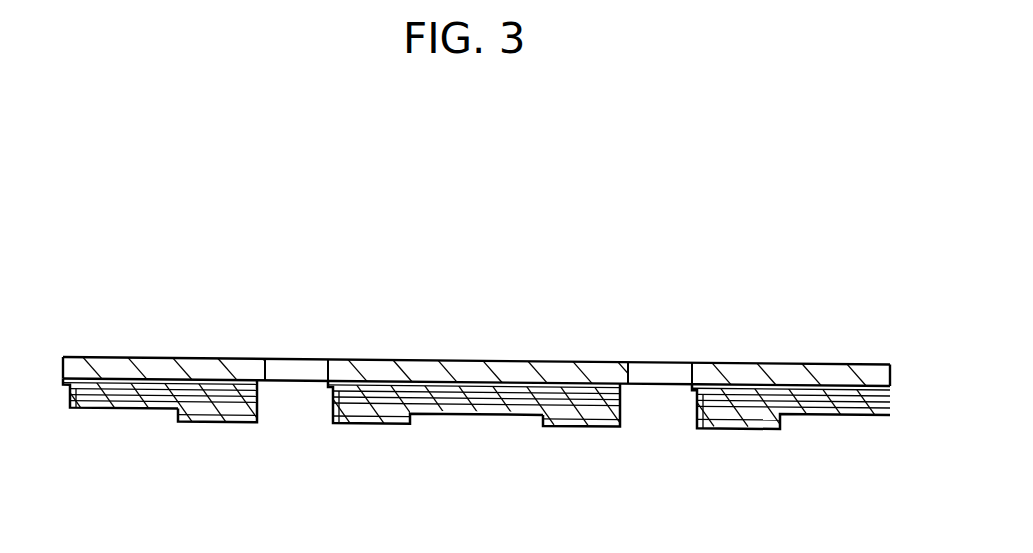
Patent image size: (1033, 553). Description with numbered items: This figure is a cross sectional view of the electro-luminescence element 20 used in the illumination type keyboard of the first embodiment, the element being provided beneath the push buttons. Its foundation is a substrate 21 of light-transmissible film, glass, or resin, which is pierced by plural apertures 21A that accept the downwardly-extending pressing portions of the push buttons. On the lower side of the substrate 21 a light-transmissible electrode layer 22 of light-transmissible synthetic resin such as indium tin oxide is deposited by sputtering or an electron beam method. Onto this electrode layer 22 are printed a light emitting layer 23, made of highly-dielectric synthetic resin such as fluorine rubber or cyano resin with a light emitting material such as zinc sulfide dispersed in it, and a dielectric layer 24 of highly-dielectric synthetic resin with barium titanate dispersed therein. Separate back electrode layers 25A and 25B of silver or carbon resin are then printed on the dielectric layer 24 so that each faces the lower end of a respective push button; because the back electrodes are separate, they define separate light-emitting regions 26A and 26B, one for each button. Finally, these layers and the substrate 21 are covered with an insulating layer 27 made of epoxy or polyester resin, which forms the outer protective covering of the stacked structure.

The electro-luminescence element 20 is at (521, 332).
The substrate 21 is at (118, 367).
The aperture 21A is at (293, 372).
The light-transmissible electrode layer 22 is at (102, 390).
The light emitting layer 23 is at (133, 396).
The dielectric layer 24 is at (167, 402).
The back electrode layer 25A is at (212, 413).
The back electrode layer 25B is at (574, 412).
The light-emitting region 26A is at (345, 355).
The light-emitting region 26B is at (720, 360).
The insulating layer 27 is at (228, 418).